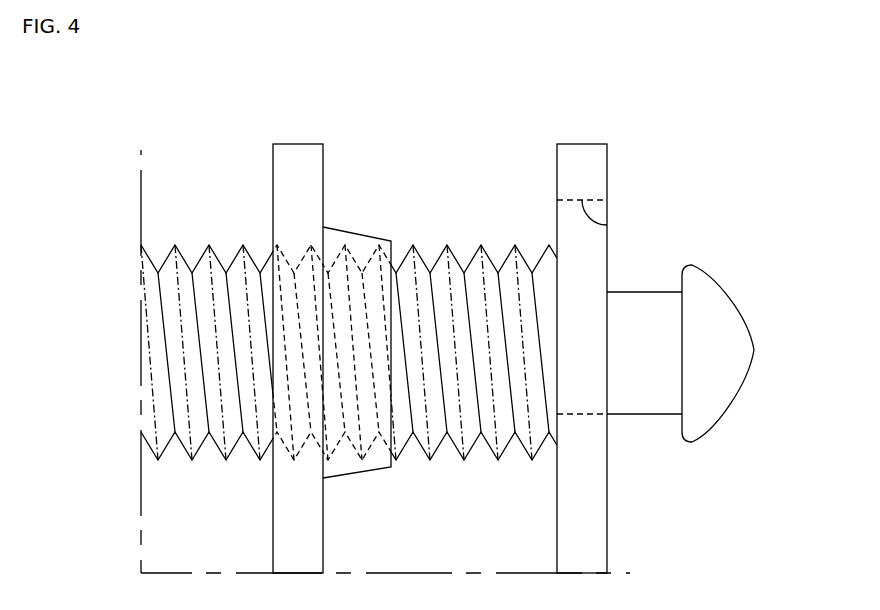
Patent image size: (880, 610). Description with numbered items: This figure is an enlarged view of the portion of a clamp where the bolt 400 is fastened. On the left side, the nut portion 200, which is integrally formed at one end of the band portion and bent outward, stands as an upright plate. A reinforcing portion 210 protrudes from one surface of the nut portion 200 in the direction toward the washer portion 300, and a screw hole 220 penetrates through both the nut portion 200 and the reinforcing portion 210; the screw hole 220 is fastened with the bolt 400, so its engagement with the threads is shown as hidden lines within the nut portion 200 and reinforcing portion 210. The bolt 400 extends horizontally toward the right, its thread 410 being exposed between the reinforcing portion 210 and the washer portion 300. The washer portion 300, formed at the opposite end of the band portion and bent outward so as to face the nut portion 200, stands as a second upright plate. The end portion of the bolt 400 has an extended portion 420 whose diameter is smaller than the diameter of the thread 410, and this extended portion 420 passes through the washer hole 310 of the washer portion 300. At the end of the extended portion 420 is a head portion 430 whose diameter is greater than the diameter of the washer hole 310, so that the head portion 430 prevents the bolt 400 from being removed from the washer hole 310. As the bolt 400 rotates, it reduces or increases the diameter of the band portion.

The nut portion 200 is at (297, 160).
The reinforcing portion 210 is at (361, 245).
The screw hole 220 is at (287, 263).
The washer portion 300 is at (584, 155).
The washer hole 310 is at (612, 219).
The bolt 400 is at (172, 362).
The thread 410 is at (444, 245).
The extended portion 420 is at (644, 302).
The head portion 430 is at (742, 350).